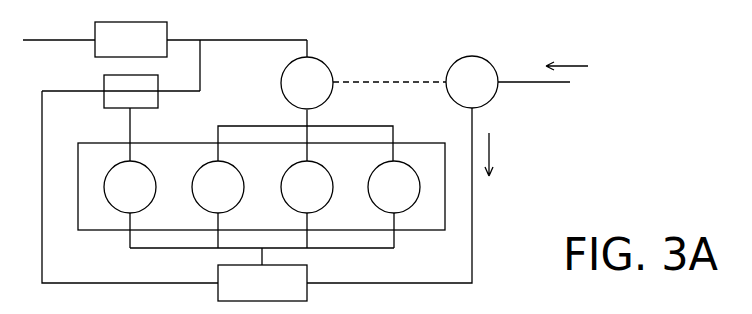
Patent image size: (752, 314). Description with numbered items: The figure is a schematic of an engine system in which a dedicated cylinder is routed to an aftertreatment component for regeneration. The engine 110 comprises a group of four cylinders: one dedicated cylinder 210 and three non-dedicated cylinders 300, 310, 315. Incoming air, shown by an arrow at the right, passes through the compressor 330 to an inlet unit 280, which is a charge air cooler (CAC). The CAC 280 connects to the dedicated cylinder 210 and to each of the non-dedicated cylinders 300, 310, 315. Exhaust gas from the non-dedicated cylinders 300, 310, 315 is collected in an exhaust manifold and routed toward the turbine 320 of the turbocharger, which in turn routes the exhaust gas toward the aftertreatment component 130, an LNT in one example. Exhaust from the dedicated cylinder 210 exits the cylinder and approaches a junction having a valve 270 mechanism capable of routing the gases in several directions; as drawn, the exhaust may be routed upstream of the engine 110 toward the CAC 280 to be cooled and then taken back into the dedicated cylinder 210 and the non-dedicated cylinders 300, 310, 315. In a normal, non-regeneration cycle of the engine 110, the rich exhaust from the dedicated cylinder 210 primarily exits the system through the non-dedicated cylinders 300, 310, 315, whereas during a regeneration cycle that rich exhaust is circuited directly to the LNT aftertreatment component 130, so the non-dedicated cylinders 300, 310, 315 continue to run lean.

The engine 110 is at (81, 153).
The aftertreatment component 130 is at (162, 28).
The dedicated cylinder 210 is at (130, 187).
The valve 270 is at (113, 83).
The inlet unit 280 is at (300, 273).
The non-dedicated cylinder 300 is at (234, 187).
The non-dedicated cylinder 310 is at (322, 187).
The non-dedicated cylinder 315 is at (411, 187).
The turbine 320 is at (326, 74).
The compressor 330 is at (494, 73).